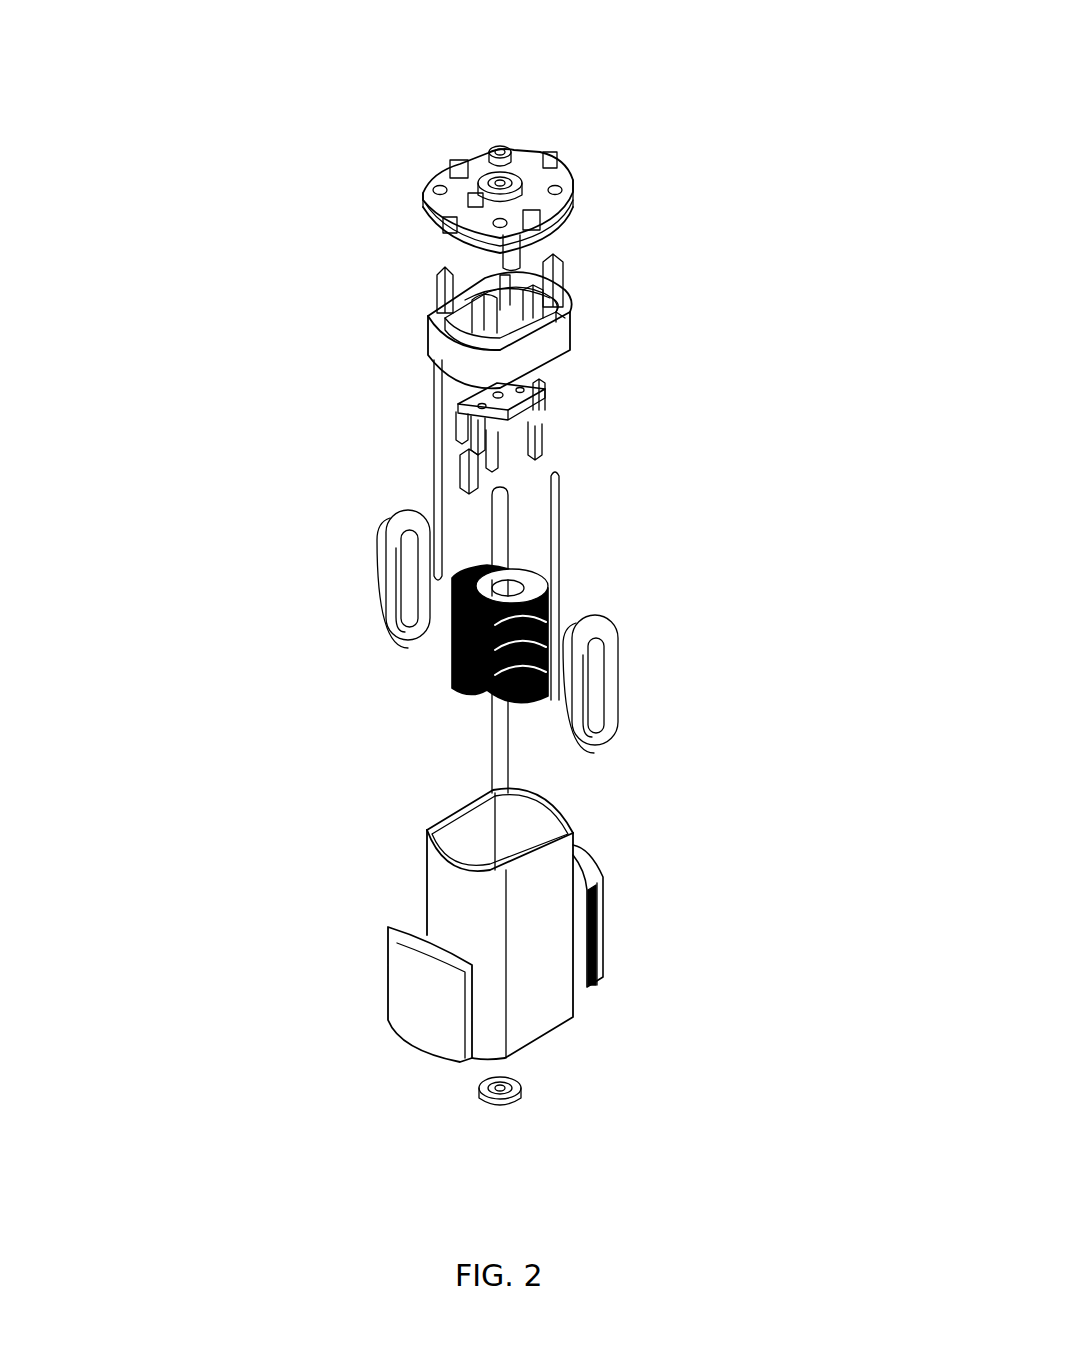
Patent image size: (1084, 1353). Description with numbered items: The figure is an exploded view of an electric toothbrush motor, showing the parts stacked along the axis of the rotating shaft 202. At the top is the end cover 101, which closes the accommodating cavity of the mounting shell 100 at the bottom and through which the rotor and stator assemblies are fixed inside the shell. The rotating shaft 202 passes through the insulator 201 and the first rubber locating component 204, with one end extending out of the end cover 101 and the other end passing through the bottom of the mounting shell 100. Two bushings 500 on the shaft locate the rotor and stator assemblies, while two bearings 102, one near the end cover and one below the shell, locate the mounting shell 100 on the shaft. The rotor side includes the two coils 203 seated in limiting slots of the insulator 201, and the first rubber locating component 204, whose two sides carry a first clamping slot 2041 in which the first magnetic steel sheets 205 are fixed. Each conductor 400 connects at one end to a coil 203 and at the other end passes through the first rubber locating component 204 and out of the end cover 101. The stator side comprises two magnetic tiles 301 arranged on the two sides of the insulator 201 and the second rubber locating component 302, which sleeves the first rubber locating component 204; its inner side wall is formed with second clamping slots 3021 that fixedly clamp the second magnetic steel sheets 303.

The mounting shell 100 is at (555, 1005).
The end cover 101 is at (450, 185).
The bearing 102 is at (500, 140).
The insulator 201 is at (455, 650).
The rotating shaft 202 is at (490, 742).
The coil 203 is at (378, 607).
The first rubber locating component 204 is at (468, 412).
The first clamping slot 2041 is at (538, 402).
The first magnetic steel sheet 205 is at (465, 478).
The magnetic tile 301 is at (608, 918).
The second rubber locating component 302 is at (572, 338).
The second clamping slot 3021 is at (565, 305).
The second magnetic steel sheet 303 is at (565, 278).
The conductor 400 is at (560, 540).
The bushing 500 is at (450, 375).